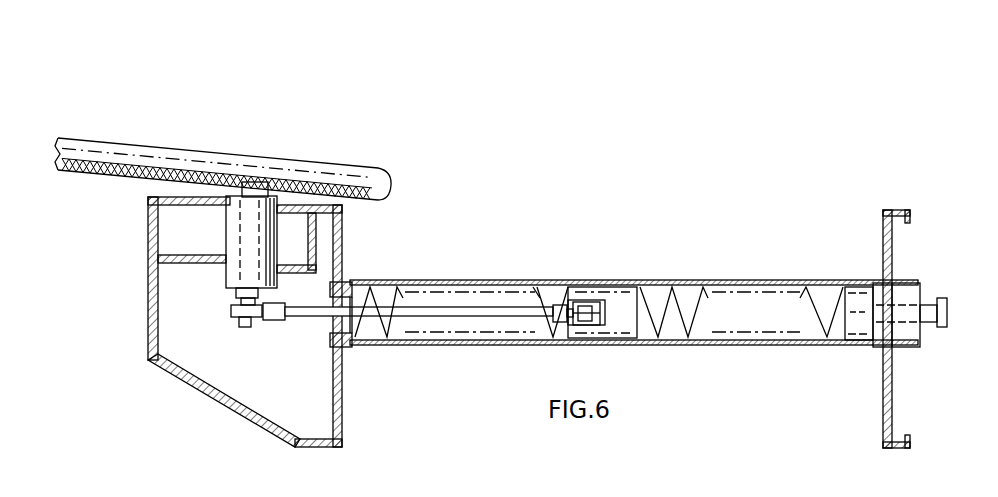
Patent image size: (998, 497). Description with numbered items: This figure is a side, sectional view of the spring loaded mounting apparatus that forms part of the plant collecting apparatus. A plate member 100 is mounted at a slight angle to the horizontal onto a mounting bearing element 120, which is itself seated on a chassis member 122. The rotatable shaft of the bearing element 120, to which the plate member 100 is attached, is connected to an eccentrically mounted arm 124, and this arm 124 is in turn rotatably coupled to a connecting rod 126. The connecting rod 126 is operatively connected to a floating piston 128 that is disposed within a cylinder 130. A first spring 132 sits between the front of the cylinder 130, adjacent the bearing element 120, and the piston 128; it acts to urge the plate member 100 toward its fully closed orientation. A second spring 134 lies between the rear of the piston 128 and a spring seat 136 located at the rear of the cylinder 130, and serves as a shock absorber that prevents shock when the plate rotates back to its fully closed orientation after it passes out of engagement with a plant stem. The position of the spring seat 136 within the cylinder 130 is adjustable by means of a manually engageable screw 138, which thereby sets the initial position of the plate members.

The plate member 100 is at (167, 122).
The mounting bearing element 120 is at (284, 200).
The chassis member 122 is at (148, 228).
The eccentrically mounted arm 124 is at (232, 314).
The connecting rod 126 is at (310, 314).
The floating piston 128 is at (618, 300).
The cylinder 130 is at (547, 279).
The first spring 132 is at (380, 297).
The second spring 134 is at (680, 298).
The spring seat 136 is at (860, 298).
The manually engageable screw 138 is at (947, 306).